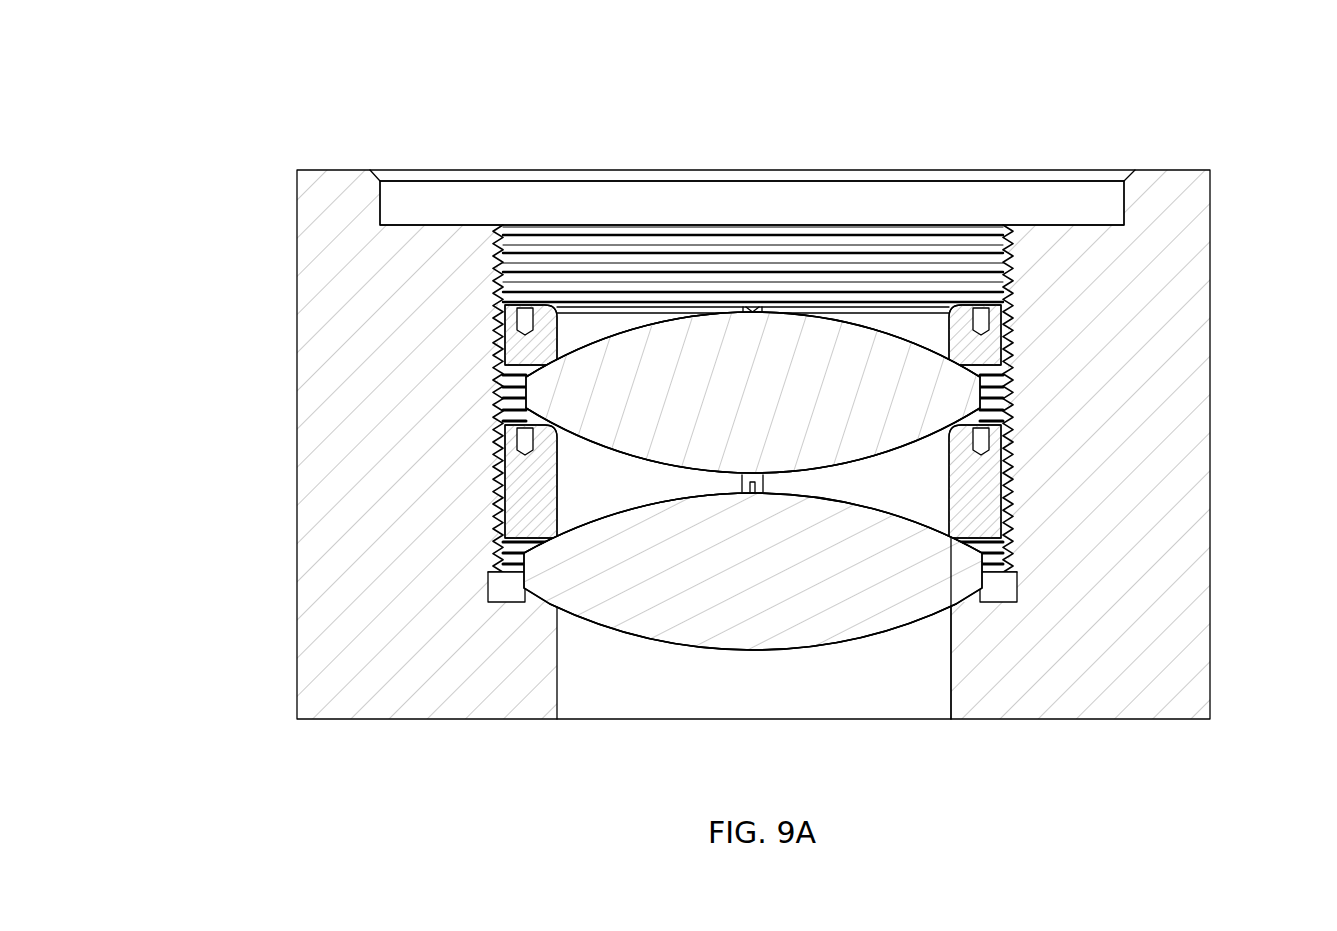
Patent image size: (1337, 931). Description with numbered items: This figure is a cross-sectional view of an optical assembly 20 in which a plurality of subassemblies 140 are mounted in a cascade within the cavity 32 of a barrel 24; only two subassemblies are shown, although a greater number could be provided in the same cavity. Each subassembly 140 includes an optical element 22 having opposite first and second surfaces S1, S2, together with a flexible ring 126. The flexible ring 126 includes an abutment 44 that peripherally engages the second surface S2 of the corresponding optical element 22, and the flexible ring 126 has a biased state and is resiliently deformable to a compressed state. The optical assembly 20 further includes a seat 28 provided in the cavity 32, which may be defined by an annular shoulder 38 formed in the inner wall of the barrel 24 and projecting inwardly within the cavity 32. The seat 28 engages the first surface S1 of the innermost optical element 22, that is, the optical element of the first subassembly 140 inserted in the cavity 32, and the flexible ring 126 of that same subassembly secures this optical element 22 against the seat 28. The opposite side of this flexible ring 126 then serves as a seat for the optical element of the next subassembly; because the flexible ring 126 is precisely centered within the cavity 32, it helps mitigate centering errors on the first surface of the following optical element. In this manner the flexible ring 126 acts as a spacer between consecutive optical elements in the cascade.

The optical assembly 20 is at (740, 414).
The barrel 24 is at (1173, 676).
The cavity 32 is at (829, 157).
The subassembly 140 is at (275, 423).
The abutment 44 is at (537, 530).
The flexible ring 126 is at (515, 515).
The optical element 22 is at (650, 622).
The second surface S2 is at (923, 518).
The first surface S1 is at (813, 647).
The annular shoulder 38 is at (958, 610).
The seat 28 is at (940, 619).